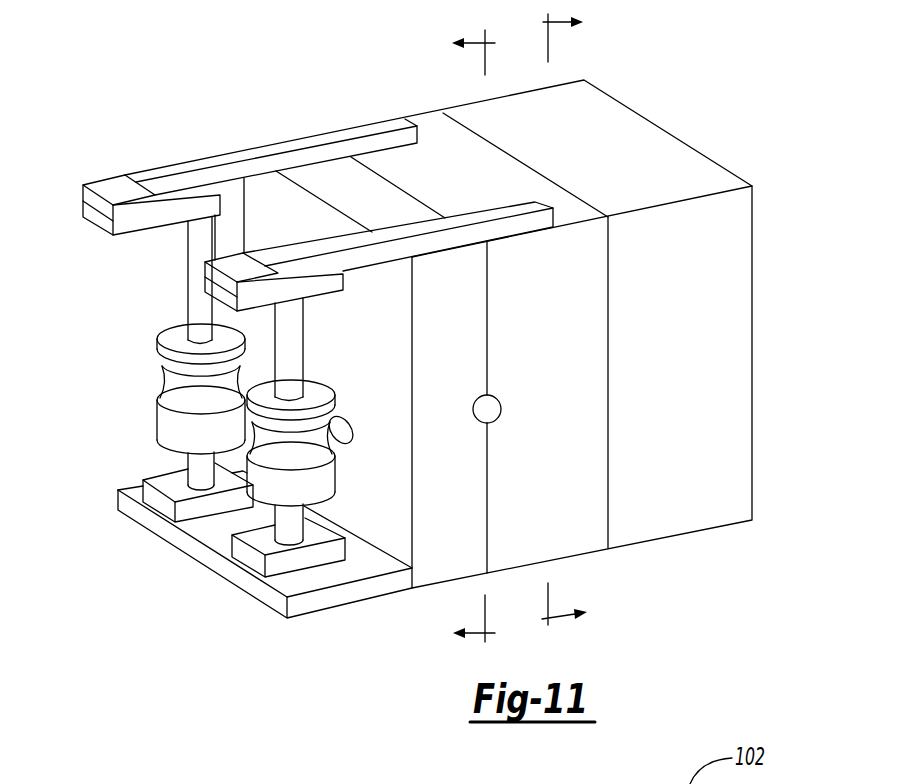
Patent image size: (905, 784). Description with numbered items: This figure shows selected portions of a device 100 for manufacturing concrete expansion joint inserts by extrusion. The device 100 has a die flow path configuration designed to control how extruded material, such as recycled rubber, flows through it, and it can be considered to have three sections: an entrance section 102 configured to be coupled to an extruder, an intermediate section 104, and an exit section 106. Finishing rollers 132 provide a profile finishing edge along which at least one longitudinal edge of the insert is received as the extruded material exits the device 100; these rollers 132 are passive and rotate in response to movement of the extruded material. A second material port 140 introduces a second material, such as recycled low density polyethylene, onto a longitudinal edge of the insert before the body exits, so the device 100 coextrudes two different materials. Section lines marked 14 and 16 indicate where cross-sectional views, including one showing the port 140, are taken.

The device 100 is at (135, 56).
The entrance section 102 is at (605, 120).
The intermediate section 104 is at (415, 163).
The exit section 106 is at (320, 177).
The finishing rollers 132 is at (176, 422).
The second material port 140 is at (498, 403).
The section line 14 is at (583, 314).
The section line 16 is at (450, 343).